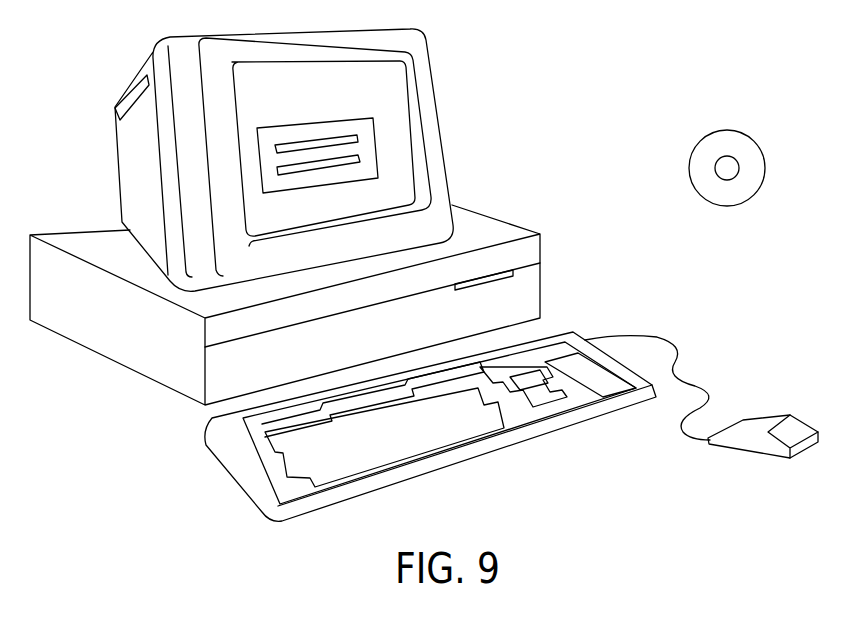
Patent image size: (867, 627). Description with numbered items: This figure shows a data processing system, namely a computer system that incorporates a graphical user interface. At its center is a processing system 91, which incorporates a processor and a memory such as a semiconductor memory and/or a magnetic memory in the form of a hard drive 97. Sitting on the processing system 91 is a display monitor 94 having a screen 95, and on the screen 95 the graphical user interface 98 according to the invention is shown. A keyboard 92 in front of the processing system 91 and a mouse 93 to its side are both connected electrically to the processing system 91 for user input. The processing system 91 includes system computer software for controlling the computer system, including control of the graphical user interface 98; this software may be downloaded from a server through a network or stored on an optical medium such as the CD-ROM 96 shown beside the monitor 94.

The processing system 91 is at (157, 381).
The keyboard 92 is at (470, 488).
The mouse 93 is at (797, 415).
The display monitor 94 is at (447, 153).
The screen 95 is at (388, 98).
The CD-ROM 96 is at (757, 135).
The hard drive 97 is at (512, 272).
The graphical user interface 98 is at (257, 153).